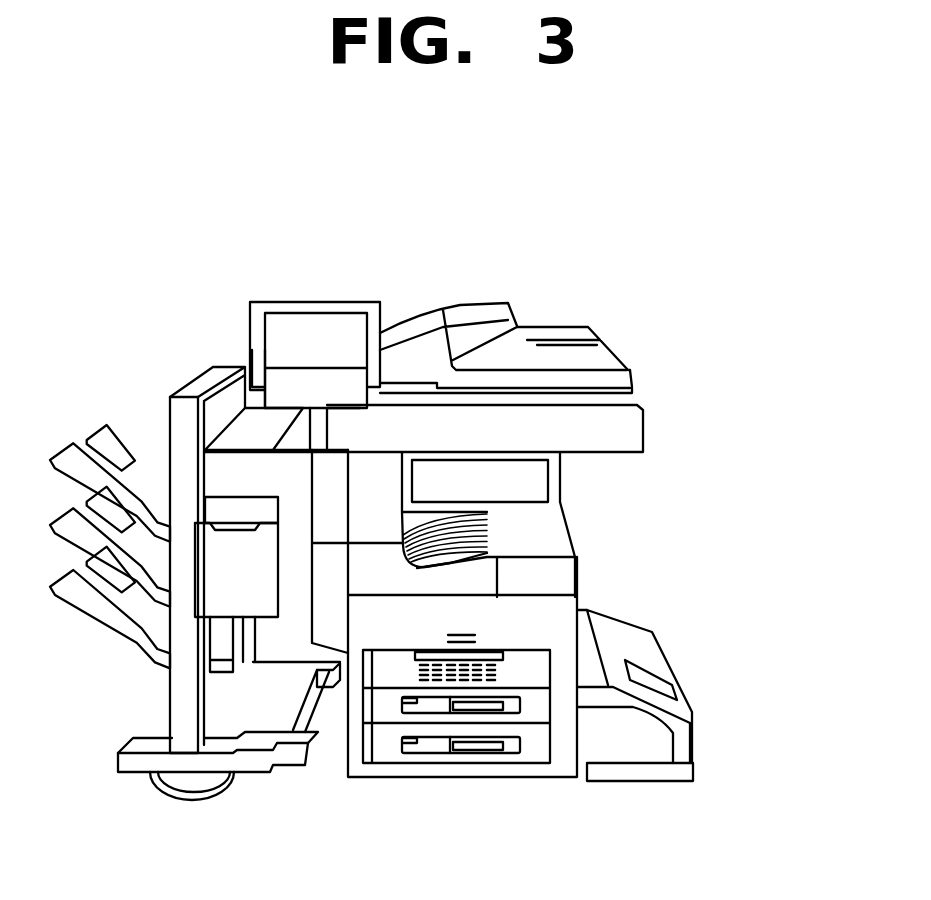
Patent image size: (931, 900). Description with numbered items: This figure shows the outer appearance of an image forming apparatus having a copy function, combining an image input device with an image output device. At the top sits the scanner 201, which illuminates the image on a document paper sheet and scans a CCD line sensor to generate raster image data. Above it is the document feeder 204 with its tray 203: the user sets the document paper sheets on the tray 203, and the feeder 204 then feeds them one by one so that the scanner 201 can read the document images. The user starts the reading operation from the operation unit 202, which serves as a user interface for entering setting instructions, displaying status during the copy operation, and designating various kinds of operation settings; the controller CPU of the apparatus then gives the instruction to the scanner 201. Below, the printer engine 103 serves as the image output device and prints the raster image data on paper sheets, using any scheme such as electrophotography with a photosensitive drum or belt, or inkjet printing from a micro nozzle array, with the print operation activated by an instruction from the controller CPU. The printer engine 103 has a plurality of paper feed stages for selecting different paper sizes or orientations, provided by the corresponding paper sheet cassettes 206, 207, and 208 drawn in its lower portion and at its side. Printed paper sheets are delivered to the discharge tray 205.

The scanner 201 is at (777, 448).
The operation unit 202 is at (378, 210).
The tray 203 is at (463, 306).
The document feeder 204 is at (563, 332).
The discharge tray 205 is at (487, 528).
The paper sheet cassette 206 is at (430, 707).
The paper sheet cassette 207 is at (533, 750).
The paper sheet cassette 208 is at (642, 753).
The printer engine 103 is at (755, 448).